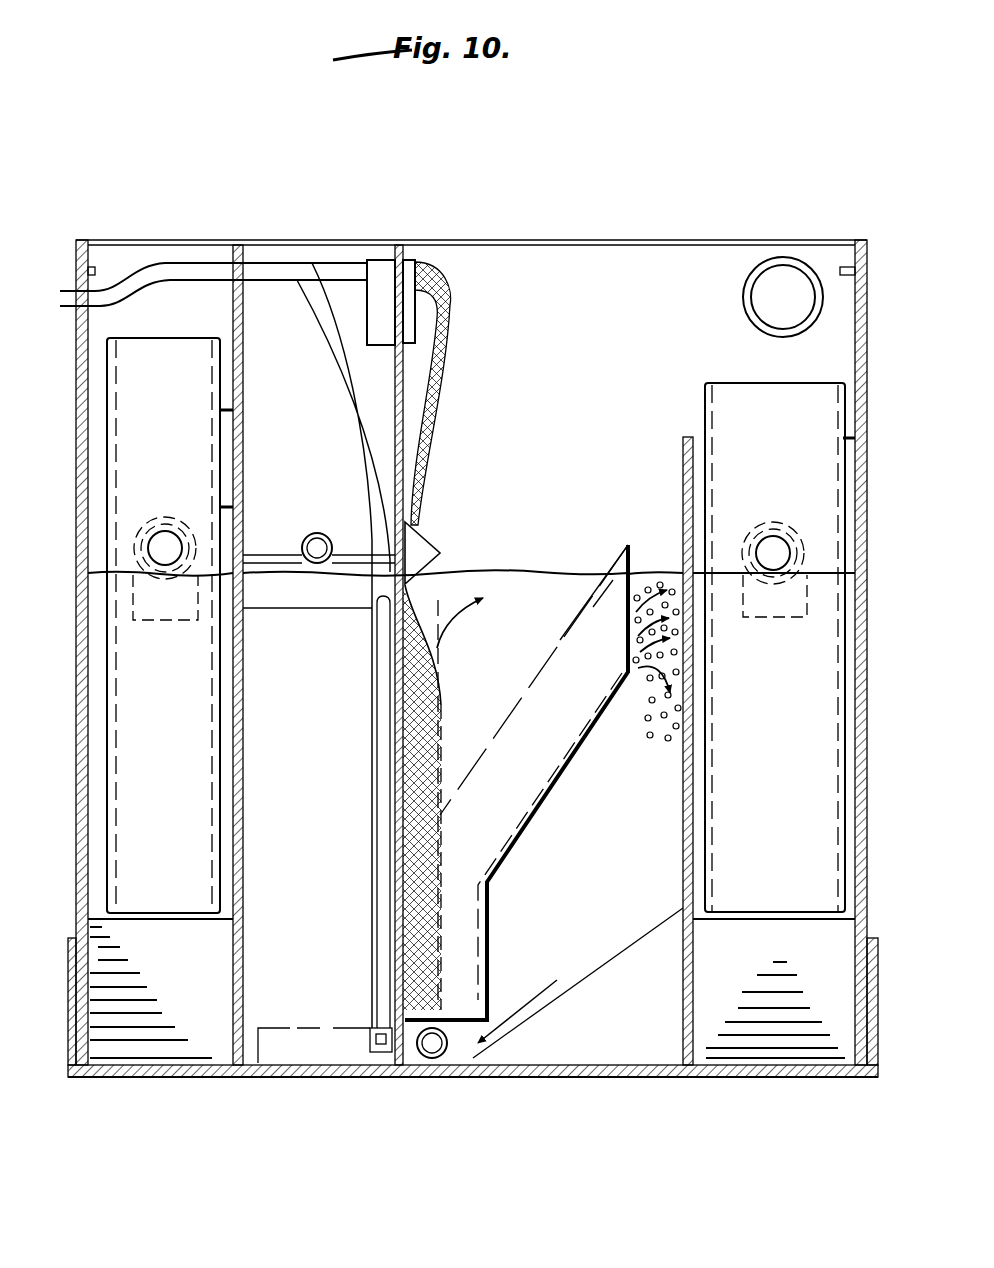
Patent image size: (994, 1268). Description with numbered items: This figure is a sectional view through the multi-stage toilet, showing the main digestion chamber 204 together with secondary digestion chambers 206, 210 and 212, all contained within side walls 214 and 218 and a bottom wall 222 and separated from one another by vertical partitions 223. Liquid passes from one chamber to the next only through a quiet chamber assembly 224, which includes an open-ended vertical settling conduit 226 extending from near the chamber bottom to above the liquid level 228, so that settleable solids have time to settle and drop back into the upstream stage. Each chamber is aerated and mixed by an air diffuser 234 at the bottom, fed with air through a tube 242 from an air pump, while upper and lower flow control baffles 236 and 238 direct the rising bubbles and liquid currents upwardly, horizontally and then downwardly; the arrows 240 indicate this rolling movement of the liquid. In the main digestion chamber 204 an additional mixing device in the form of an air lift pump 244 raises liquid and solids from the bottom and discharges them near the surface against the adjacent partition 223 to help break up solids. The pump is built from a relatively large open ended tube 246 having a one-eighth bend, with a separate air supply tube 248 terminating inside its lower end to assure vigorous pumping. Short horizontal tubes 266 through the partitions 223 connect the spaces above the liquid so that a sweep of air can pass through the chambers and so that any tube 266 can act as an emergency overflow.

The main digestion chamber 204 is at (646, 904).
The secondary digestion chamber 206 is at (703, 741).
The secondary digestion chamber 210 is at (330, 951).
The secondary digestion chamber 212 is at (222, 726).
The side wall 214 is at (890, 608).
The side wall 218 is at (76, 565).
The bottom wall 222 is at (165, 1078).
The vertical partition 223 is at (244, 449).
The quiet chamber assembly 224 is at (212, 326).
The settling conduit 226 is at (133, 345).
The liquid level 228 is at (535, 561).
The air diffuser 234 is at (295, 1027).
The upper flow control baffle 236 is at (272, 548).
The lower flow control baffle 238 is at (225, 917).
The arrows 240 is at (538, 1000).
The tube 242 is at (338, 323).
The air lift pump 244 is at (615, 545).
The open ended tube 246 is at (566, 655).
The air supply tube 248 is at (420, 330).
The horizontal tube 266 is at (410, 305).